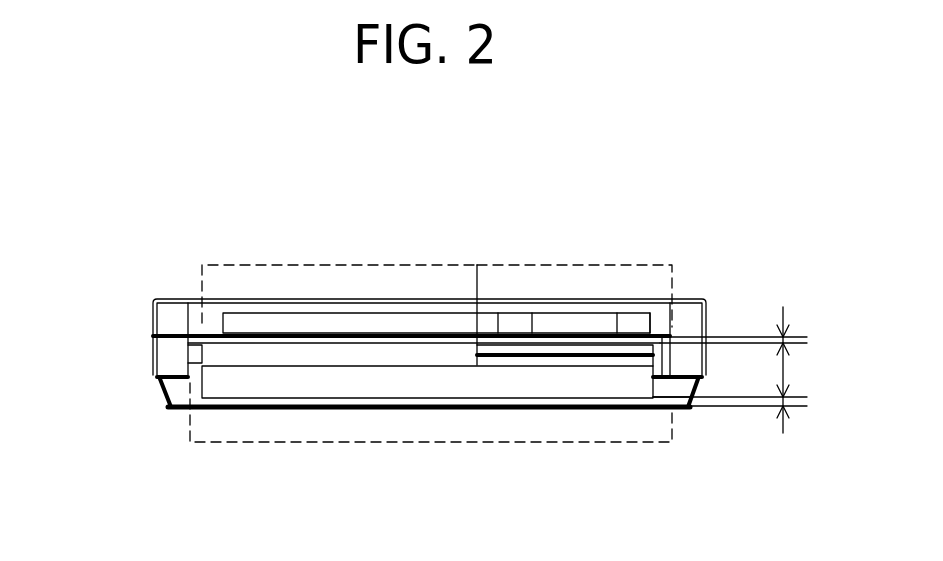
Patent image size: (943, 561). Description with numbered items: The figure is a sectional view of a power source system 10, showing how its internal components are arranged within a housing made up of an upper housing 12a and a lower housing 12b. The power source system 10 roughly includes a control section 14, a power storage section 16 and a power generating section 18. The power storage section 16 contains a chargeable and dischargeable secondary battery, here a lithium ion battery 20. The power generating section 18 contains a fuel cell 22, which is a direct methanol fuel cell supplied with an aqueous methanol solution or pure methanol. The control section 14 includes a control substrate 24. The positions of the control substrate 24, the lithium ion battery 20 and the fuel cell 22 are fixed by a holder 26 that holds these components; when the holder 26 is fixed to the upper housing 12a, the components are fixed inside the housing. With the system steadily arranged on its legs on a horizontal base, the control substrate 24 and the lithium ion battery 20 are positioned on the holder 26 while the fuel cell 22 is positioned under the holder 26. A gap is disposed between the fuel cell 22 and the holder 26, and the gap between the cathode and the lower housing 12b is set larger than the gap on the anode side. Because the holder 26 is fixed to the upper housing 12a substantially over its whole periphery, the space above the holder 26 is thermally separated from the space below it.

The power source system 10 is at (757, 242).
The upper housing 12a is at (160, 299).
The lower housing 12b is at (168, 409).
The control section 14 is at (574, 311).
The power storage section 16 is at (339, 307).
The power generating section 18 is at (430, 401).
The lithium ion battery 20 is at (377, 320).
The fuel cell 22 is at (523, 399).
The control substrate 24 is at (520, 312).
The holder 26 is at (153, 335).